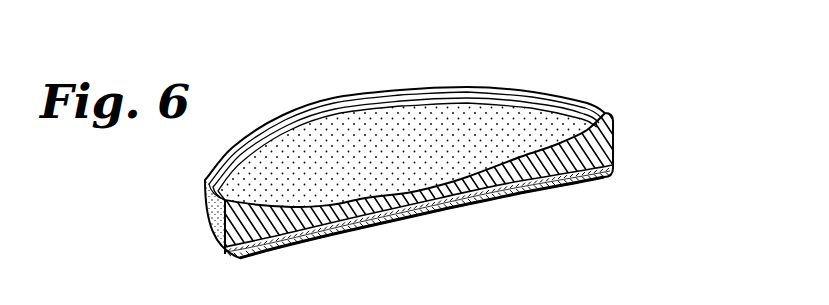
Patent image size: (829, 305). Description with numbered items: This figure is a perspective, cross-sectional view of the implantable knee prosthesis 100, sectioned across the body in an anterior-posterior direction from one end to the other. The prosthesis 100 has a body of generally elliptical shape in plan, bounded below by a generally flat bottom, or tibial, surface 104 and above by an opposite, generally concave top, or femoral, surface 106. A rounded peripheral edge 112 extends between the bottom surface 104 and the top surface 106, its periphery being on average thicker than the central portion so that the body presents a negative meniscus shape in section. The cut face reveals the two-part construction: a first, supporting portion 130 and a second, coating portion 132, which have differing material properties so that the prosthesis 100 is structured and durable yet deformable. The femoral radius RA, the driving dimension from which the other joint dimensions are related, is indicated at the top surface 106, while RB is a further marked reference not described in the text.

The implantable knee prosthesis 100 is at (603, 80).
The bottom surface 104 is at (292, 245).
The top surface 106 is at (348, 148).
The peripheral edge 112 is at (205, 216).
The supporting portion 130 is at (528, 190).
The coating portion 132 is at (616, 142).
The femoral radius RA is at (415, 196).
The reference axis B RB is at (432, 300).